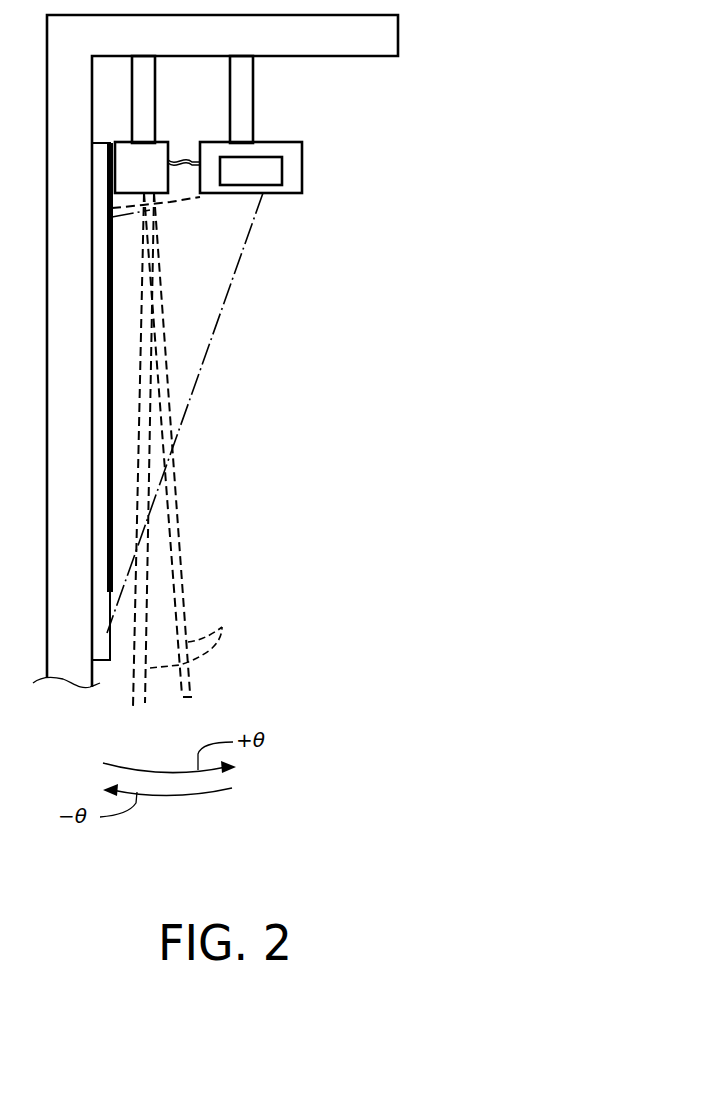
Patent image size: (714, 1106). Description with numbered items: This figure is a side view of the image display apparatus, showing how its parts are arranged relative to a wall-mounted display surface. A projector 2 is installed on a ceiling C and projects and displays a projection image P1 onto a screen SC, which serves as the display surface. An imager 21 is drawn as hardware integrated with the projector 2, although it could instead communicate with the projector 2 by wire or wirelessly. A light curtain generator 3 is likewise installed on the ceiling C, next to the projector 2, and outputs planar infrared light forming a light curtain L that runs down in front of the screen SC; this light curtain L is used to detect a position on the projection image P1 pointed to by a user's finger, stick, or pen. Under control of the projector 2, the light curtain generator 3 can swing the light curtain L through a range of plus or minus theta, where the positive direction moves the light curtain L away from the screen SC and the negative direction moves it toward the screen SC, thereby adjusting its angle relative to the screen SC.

The projector 2 is at (278, 148).
The imager 21 is at (282, 172).
The light curtain generator 3 is at (163, 142).
The ceiling C is at (365, 57).
The screen SC is at (112, 641).
The projection image P1 is at (113, 378).
The light curtain L is at (189, 633).